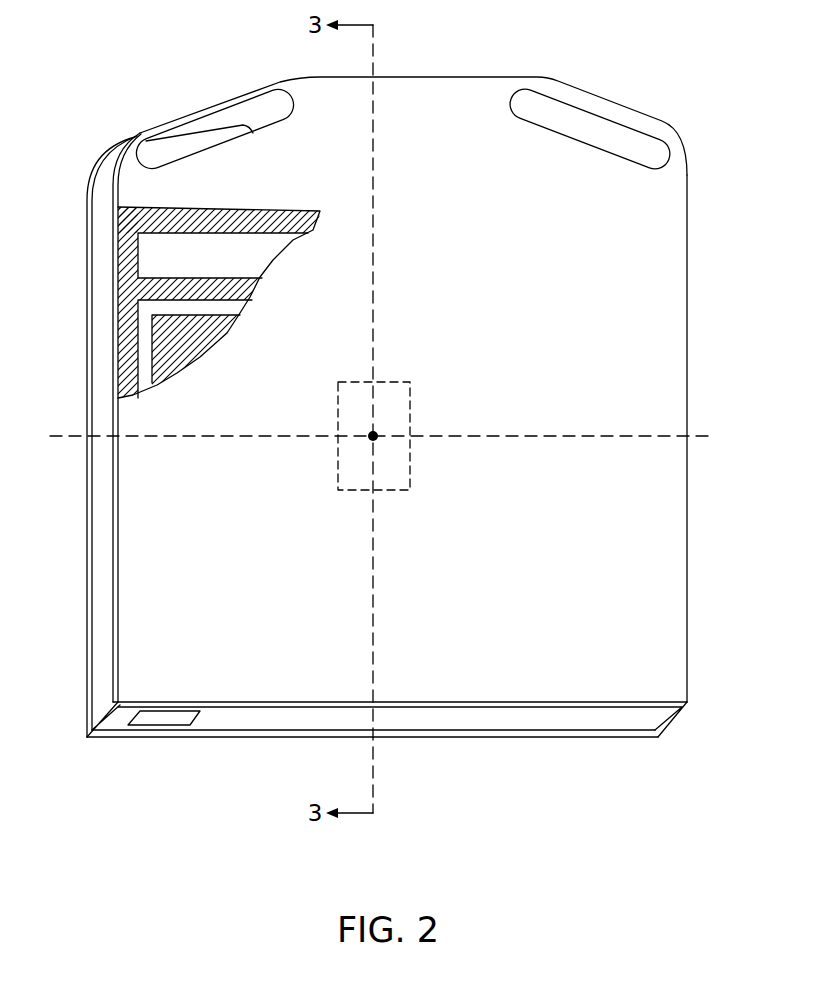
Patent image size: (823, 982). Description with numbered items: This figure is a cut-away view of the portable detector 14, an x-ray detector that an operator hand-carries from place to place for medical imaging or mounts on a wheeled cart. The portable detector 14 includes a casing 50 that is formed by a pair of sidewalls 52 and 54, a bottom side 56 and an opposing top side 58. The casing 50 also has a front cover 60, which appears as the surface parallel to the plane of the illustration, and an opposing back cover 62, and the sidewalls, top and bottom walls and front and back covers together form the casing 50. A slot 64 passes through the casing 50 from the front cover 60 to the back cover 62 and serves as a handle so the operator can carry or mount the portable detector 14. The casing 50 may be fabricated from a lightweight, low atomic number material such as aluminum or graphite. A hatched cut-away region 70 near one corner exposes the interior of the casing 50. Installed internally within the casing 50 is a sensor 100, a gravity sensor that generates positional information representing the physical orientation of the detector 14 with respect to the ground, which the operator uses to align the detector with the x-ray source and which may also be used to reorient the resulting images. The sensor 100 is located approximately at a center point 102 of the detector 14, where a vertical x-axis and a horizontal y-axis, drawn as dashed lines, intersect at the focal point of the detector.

The portable detector 14 is at (140, 58).
The casing 50 is at (496, 87).
The sidewall 52 is at (100, 476).
The sidewall 54 is at (687, 592).
The bottom side 56 is at (553, 722).
The top side 58 is at (443, 77).
The front cover 60 is at (625, 705).
The back cover 62 is at (462, 732).
The slot 64 is at (603, 130).
The cutaway showing internal layers 70 is at (152, 330).
The sensor 100 is at (410, 405).
The center point 102 is at (376, 440).